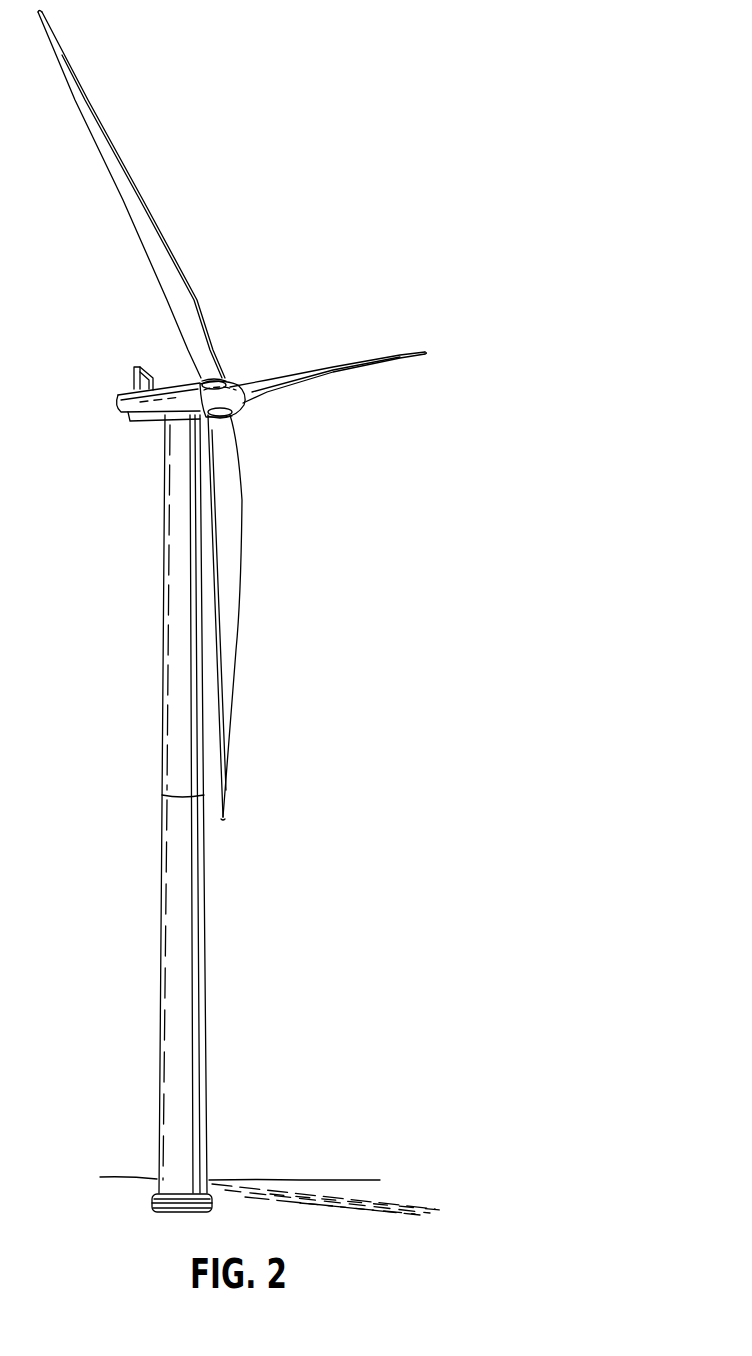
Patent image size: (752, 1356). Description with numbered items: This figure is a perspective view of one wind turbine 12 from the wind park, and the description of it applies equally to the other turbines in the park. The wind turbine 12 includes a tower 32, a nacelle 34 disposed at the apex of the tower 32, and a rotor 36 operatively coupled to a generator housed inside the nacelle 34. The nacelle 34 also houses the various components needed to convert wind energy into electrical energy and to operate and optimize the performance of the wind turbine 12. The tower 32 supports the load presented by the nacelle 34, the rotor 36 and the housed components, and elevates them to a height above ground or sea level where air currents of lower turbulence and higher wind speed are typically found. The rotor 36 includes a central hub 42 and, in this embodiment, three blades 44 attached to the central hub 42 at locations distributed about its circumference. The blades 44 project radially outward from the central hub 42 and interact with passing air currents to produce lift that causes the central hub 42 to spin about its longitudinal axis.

The wind turbine 12 is at (358, 243).
The tower 32 is at (165, 670).
The nacelle 34 is at (125, 392).
The rotor 36 is at (240, 411).
The central hub 42 is at (231, 381).
The blades 44 is at (75, 101).